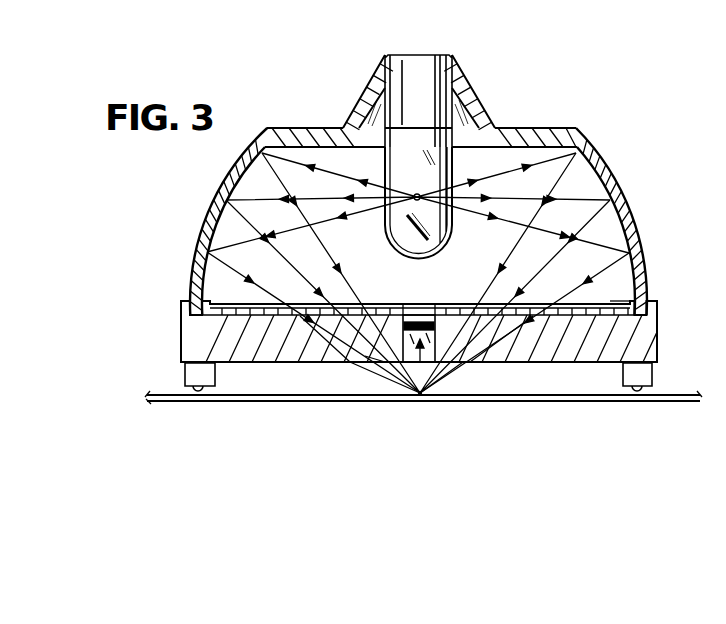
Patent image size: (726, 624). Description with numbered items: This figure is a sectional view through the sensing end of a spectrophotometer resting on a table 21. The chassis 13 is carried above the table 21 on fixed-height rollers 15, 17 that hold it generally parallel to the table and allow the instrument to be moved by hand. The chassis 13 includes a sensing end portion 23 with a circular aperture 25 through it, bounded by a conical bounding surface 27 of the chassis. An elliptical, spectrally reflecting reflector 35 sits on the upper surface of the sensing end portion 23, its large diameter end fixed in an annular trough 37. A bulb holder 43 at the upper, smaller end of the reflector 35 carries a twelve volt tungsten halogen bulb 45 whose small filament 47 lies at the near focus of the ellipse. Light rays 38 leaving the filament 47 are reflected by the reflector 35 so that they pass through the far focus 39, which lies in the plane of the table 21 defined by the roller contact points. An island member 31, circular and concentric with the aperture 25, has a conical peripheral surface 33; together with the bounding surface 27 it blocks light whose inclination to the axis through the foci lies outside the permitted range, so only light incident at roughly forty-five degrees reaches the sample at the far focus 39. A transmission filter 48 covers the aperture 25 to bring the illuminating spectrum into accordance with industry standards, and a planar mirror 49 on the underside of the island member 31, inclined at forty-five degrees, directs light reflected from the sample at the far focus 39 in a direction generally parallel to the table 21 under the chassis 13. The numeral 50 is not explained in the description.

The chassis 13 is at (647, 347).
The roller 15 is at (640, 377).
The roller 17 is at (190, 372).
The table 21 is at (370, 388).
The sensing end portion 23 is at (166, 338).
The aperture 25 is at (356, 307).
The bounding surface 27 is at (330, 330).
The island member 31 is at (465, 308).
The conical peripheral surface 33 is at (377, 307).
The reflector 35 is at (643, 263).
The annular trough 37 is at (657, 305).
The light rays 38 is at (338, 183).
The far focus 39 is at (425, 397).
The bulb holder 43 is at (412, 70).
The bulb 45 is at (430, 220).
The filament 47 is at (417, 194).
The transmission filter 48 is at (603, 305).
The planar mirror 49 is at (365, 356).
The support shoulder 50 is at (365, 102).